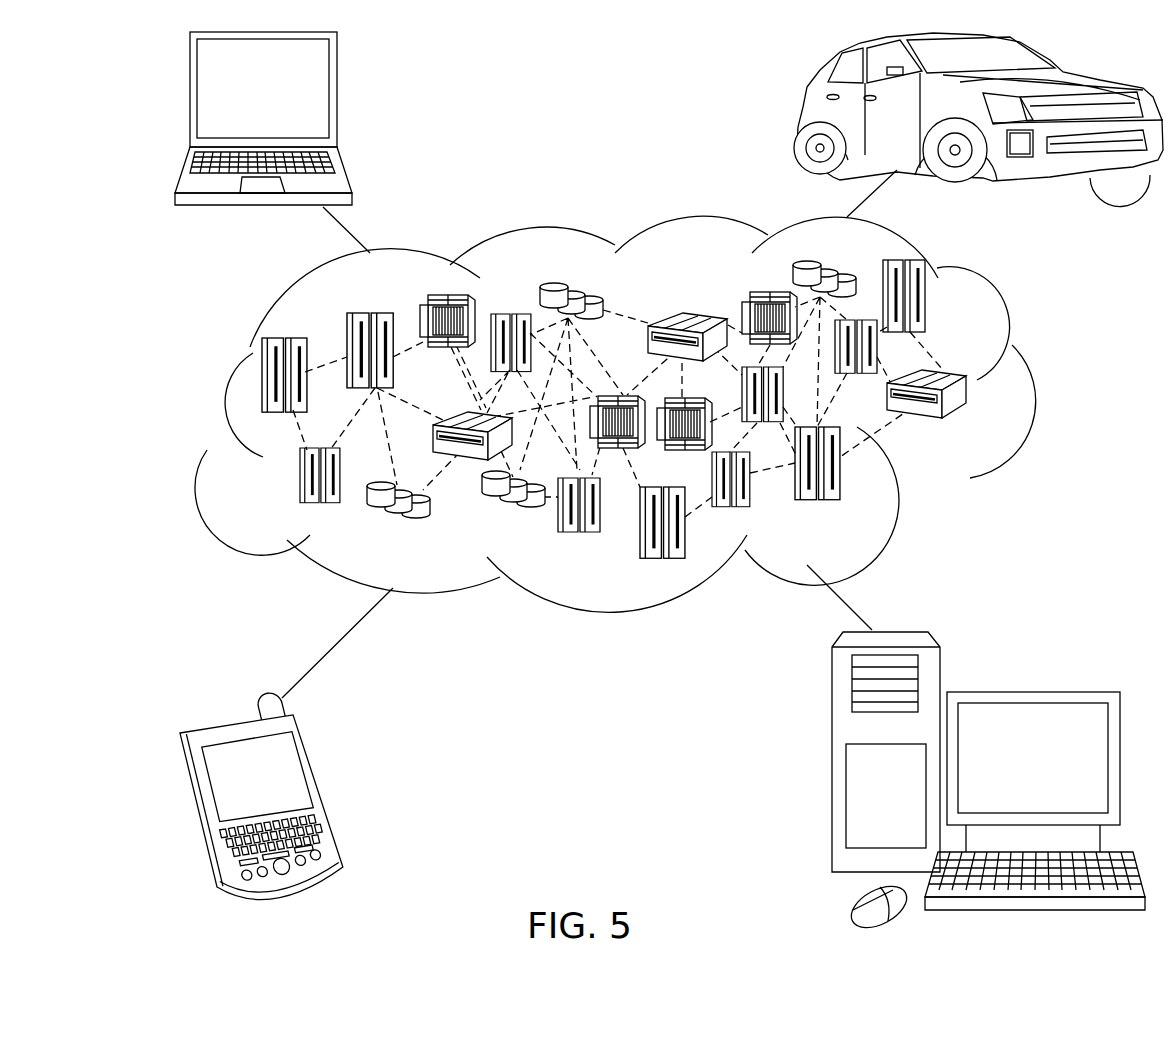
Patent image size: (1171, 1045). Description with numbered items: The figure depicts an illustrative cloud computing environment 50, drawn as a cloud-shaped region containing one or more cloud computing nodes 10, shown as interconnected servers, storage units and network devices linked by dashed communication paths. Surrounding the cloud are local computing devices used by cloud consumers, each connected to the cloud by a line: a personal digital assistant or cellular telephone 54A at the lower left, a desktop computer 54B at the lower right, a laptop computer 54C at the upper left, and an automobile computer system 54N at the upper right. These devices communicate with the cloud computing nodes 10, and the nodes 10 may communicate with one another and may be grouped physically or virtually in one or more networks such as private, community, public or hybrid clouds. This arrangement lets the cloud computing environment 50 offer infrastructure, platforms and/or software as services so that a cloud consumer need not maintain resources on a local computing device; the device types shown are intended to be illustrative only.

The cloud computing environment 50 is at (1032, 386).
The cloud computing nodes 10 is at (970, 418).
The personal digital assistant or cellular telephone 54A is at (325, 786).
The desktop computer 54B is at (1030, 692).
The laptop computer 54C is at (337, 96).
The automobile computer system 54N is at (800, 112).